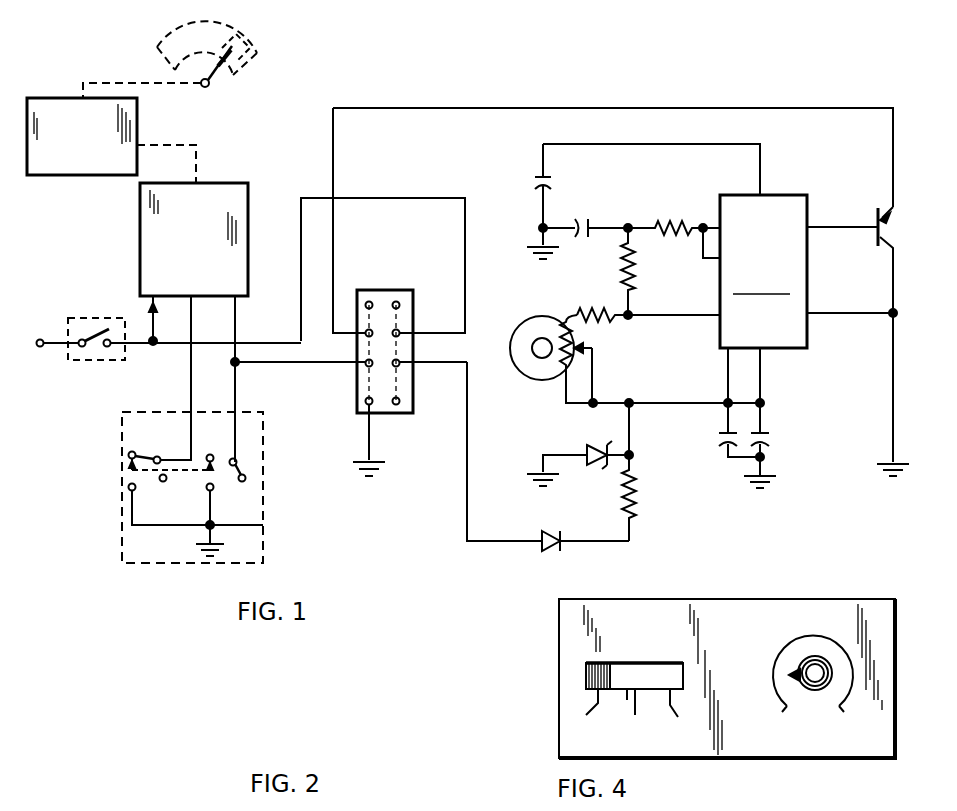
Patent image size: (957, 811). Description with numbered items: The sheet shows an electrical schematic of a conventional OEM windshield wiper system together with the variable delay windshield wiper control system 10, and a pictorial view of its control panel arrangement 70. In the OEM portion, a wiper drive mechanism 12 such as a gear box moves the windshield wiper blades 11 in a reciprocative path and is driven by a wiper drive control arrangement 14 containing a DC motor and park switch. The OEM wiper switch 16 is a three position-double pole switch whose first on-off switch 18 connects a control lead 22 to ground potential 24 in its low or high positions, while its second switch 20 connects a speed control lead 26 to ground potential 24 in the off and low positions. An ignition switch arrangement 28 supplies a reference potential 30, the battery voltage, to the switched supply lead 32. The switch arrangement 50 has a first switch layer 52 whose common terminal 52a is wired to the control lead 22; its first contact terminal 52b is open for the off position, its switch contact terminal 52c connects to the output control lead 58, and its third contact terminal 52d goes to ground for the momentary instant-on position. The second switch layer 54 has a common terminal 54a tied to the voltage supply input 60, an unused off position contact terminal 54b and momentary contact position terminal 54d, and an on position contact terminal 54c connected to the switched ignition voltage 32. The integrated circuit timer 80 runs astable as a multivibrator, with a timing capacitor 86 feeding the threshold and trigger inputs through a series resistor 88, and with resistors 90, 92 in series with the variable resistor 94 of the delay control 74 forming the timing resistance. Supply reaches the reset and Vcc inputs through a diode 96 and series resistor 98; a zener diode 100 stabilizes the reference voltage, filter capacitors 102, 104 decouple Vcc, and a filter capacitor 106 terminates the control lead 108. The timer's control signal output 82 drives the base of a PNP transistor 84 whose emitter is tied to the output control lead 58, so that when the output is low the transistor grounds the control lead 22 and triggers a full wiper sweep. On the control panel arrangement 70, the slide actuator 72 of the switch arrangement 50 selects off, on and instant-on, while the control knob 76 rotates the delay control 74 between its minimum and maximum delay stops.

In FIG. 1, the variable delay windshield wiper control system 10 is at (549, 102).
In FIG. 1, the windshield wiper blades 11 is at (276, 57).
In FIG. 1, the wiper drive mechanism 12 is at (51, 177).
In FIG. 1, the wiper drive control arrangement 14 is at (140, 203).
In FIG. 1, the OEM wiper switch 16 is at (168, 569).
In FIG. 1, the three position on-off switch 18 is at (275, 510).
In FIG. 1, the three position switch 20 is at (118, 486).
In FIG. 1, the control lead 22 is at (250, 300).
In FIG. 1, the ground potential 24 is at (240, 527).
In FIG. 1, the speed control lead 26 is at (190, 374).
In FIG. 1, the ignition switch arrangement 28 is at (103, 312).
In FIG. 1, the reference potential 30 is at (44, 333).
In FIG. 1, the switched supply lead 32 is at (147, 348).
In FIG. 1, the switch arrangement 50 is at (387, 284).
In FIG. 4, the switch arrangement 50 is at (650, 650).
In FIG. 1, the first switch layer 52 is at (330, 344).
In FIG. 1, the common terminal 52a is at (365, 366).
In FIG. 1, the first contact terminal 52b is at (360, 300).
In FIG. 1, the switch contact terminal 52c is at (365, 336).
In FIG. 1, the third contact terminal 52d is at (365, 402).
In FIG. 1, the second switch layer 54 is at (424, 355).
In FIG. 1, the common terminal 54a is at (400, 365).
In FIG. 1, the off position contact terminal 54b is at (399, 302).
In FIG. 1, the on position contact terminal 54c is at (400, 330).
In FIG. 1, the momentary contact position terminal 54d is at (387, 418).
In FIG. 1, the output control lead 58 is at (602, 106).
In FIG. 1, the voltage supply input 60 is at (478, 538).
In FIG. 4, the control panel arrangement 70 is at (758, 608).
In FIG. 4, the slide actuator 72 is at (597, 662).
In FIG. 1, the delay control 74 is at (539, 384).
In FIG. 4, the delay control 74 is at (878, 638).
In FIG. 1, the control knob 76 is at (526, 328).
In FIG. 4, the control knob 76 is at (822, 656).
In FIG. 1, the integrated circuit timer 80 is at (773, 194).
In FIG. 1, the control signal output 82 is at (820, 225).
In FIG. 1, the PNP transistor 84 is at (877, 212).
In FIG. 1, the timing capacitor 86 is at (590, 224).
In FIG. 1, the series resistor 88 is at (672, 222).
In FIG. 1, the resistor 90 is at (634, 272).
In FIG. 1, the resistor 92 is at (592, 310).
In FIG. 1, the variable resistor 94 is at (568, 333).
In FIG. 1, the diode 96 is at (550, 530).
In FIG. 1, the series resistor 98 is at (640, 494).
In FIG. 1, the zener diode 100 is at (580, 456).
In FIG. 1, the filter capacitor 102 is at (770, 432).
In FIG. 1, the filter capacitor 104 is at (720, 438).
In FIG. 1, the filter capacitor 106 is at (536, 170).
In FIG. 1, the control lead 108 is at (760, 142).